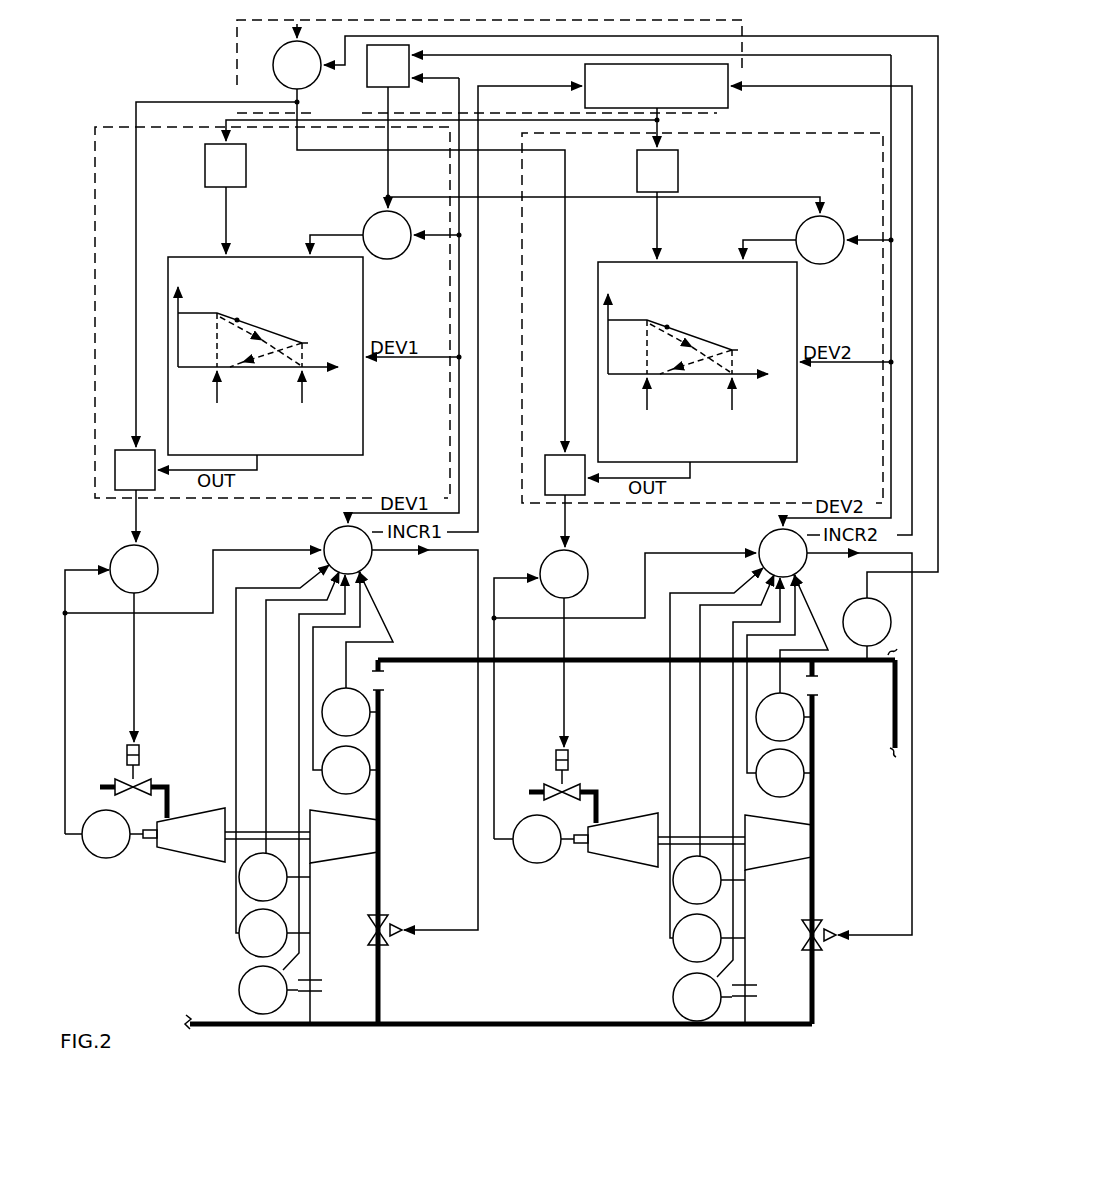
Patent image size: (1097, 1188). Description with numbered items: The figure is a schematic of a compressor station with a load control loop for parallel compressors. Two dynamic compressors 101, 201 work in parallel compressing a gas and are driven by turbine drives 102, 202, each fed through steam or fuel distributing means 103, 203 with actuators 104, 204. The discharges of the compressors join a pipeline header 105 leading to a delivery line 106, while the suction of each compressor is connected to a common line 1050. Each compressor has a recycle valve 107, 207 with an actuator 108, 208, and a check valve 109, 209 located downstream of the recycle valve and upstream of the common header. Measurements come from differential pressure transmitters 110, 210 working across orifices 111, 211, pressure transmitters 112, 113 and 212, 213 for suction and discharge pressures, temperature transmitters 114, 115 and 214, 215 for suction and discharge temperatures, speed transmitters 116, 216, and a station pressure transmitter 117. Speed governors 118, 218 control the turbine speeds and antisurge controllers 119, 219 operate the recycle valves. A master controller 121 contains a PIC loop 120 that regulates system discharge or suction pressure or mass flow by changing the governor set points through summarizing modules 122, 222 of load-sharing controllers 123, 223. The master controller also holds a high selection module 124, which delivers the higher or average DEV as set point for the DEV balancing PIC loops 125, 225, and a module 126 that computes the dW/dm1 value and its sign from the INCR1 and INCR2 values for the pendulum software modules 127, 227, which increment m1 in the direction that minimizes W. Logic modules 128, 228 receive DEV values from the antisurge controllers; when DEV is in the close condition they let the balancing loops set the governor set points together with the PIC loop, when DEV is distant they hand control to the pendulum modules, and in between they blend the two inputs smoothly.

The dynamic compressor 101 is at (344, 836).
The turbine drive 102 is at (191, 835).
The steam or fuel distributing means 103 is at (141, 783).
The actuator 104 is at (139, 753).
The pipeline header 105 is at (833, 668).
The delivery line 106 is at (890, 762).
The recycle valve 107 is at (383, 915).
The actuator 108 is at (399, 938).
The check valve 109 is at (372, 668).
The differential pressure transmitter 110 is at (240, 991).
The orifice 111 is at (312, 979).
The pressure transmitter 112 is at (240, 881).
The pressure transmitter 113 is at (327, 700).
The temperature transmitter 114 is at (240, 941).
The temperature transmitter 115 is at (324, 782).
The speed transmitter 116 is at (109, 858).
The station pressure transmitter 117 is at (871, 601).
The speed governor 118 is at (112, 560).
The antisurge controller 119 is at (328, 538).
The PIC loop 120 is at (274, 61).
The master controller 121 is at (237, 113).
The summarizing module 122 is at (136, 446).
The load-sharing controller 123 is at (170, 500).
The high selection module 124 is at (406, 89).
The DEV balancing PIC loop 125 is at (363, 226).
The module 126 is at (728, 108).
The pendulum software module 127 is at (205, 172).
The logic module 128 is at (265, 369).
The dynamic compressor 201 is at (778, 842).
The turbine drive 202 is at (623, 840).
The steam or fuel distributing means 203 is at (570, 788).
The actuator 204 is at (568, 758).
The recycle valve 207 is at (817, 920).
The actuator 208 is at (833, 945).
The check valve 209 is at (806, 675).
The differential pressure transmitter 210 is at (674, 996).
The orifice 211 is at (748, 984).
The pressure transmitter 212 is at (674, 884).
The pressure transmitter 213 is at (760, 704).
The temperature transmitter 214 is at (674, 945).
The temperature transmitter 215 is at (758, 787).
The speed transmitter 216 is at (540, 863).
The speed governor 218 is at (541, 565).
The antisurge controller 219 is at (762, 541).
The summarizing module 222 is at (565, 451).
The load-sharing controller 223 is at (598, 505).
The DEV balancing PIC loop 225 is at (796, 231).
The pendulum software module 227 is at (637, 177).
The logic module 228 is at (697, 375).
The common line 1050 is at (186, 1018).